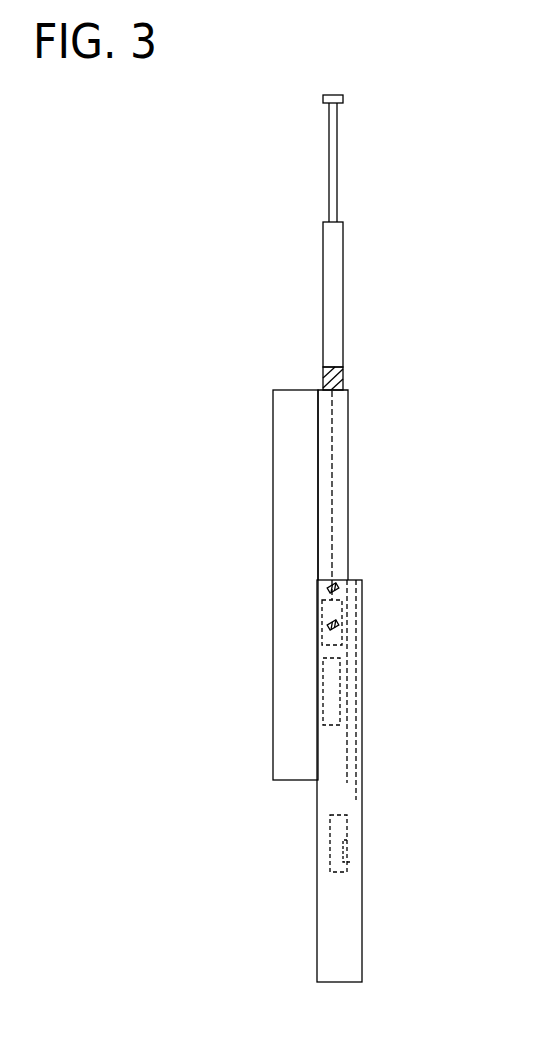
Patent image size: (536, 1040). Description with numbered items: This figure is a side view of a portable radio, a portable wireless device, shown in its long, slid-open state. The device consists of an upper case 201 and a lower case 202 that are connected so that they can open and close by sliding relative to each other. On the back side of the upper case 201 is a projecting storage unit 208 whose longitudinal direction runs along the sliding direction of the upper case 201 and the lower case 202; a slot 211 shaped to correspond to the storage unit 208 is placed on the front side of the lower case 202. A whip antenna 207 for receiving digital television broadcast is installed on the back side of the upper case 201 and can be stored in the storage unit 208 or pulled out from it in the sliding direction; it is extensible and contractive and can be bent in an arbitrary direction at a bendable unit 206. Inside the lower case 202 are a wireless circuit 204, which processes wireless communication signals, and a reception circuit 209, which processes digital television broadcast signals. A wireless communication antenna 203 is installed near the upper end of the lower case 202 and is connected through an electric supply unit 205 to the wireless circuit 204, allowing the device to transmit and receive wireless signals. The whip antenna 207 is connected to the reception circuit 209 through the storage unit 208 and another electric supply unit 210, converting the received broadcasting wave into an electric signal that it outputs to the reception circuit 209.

The upper case 201 is at (288, 390).
The lower case 202 is at (353, 953).
The wireless communication antenna 203 is at (362, 600).
The wireless circuit 204 is at (362, 710).
The electric supply unit 205 is at (362, 643).
The bendable unit 206 is at (343, 360).
The whip antenna 207 is at (343, 240).
The storage unit 208 is at (348, 456).
The reception circuit 209 is at (350, 862).
The electric supply unit 210 is at (320, 595).
The slot 211 is at (362, 750).